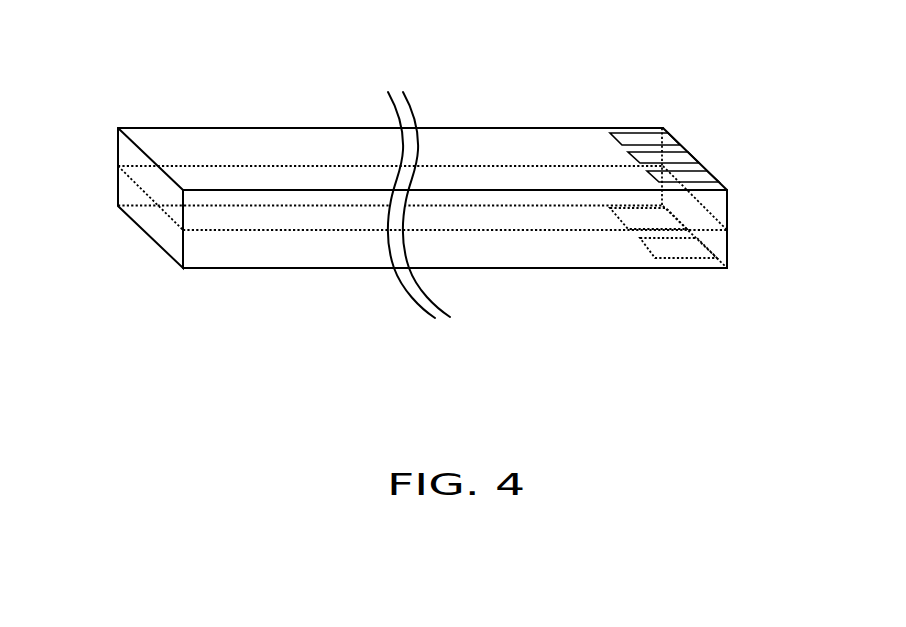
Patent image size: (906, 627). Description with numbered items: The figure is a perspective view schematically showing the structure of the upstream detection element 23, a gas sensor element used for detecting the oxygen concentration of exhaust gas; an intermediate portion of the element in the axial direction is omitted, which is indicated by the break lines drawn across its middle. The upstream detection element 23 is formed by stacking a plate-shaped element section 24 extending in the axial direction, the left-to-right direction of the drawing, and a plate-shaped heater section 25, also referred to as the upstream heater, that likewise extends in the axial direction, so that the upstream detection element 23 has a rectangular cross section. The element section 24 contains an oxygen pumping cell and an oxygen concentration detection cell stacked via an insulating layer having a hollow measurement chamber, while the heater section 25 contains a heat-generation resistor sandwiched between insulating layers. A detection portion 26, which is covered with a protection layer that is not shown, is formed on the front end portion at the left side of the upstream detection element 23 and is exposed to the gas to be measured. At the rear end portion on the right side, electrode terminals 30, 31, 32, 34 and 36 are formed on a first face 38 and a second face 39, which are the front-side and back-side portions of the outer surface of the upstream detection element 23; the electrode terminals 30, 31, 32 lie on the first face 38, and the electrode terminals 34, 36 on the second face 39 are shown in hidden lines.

The upstream detection element 23 is at (382, 40).
The element section 24 is at (128, 155).
The heater section 25 is at (160, 230).
The detection portion 26 is at (222, 153).
The electrode terminal 30 is at (648, 137).
The electrode terminal 31 is at (687, 158).
The electrode terminal 32 is at (697, 177).
The electrode terminal 34 is at (623, 219).
The electrode terminal 36 is at (655, 248).
The first face 38 is at (288, 137).
The second face 39 is at (281, 289).